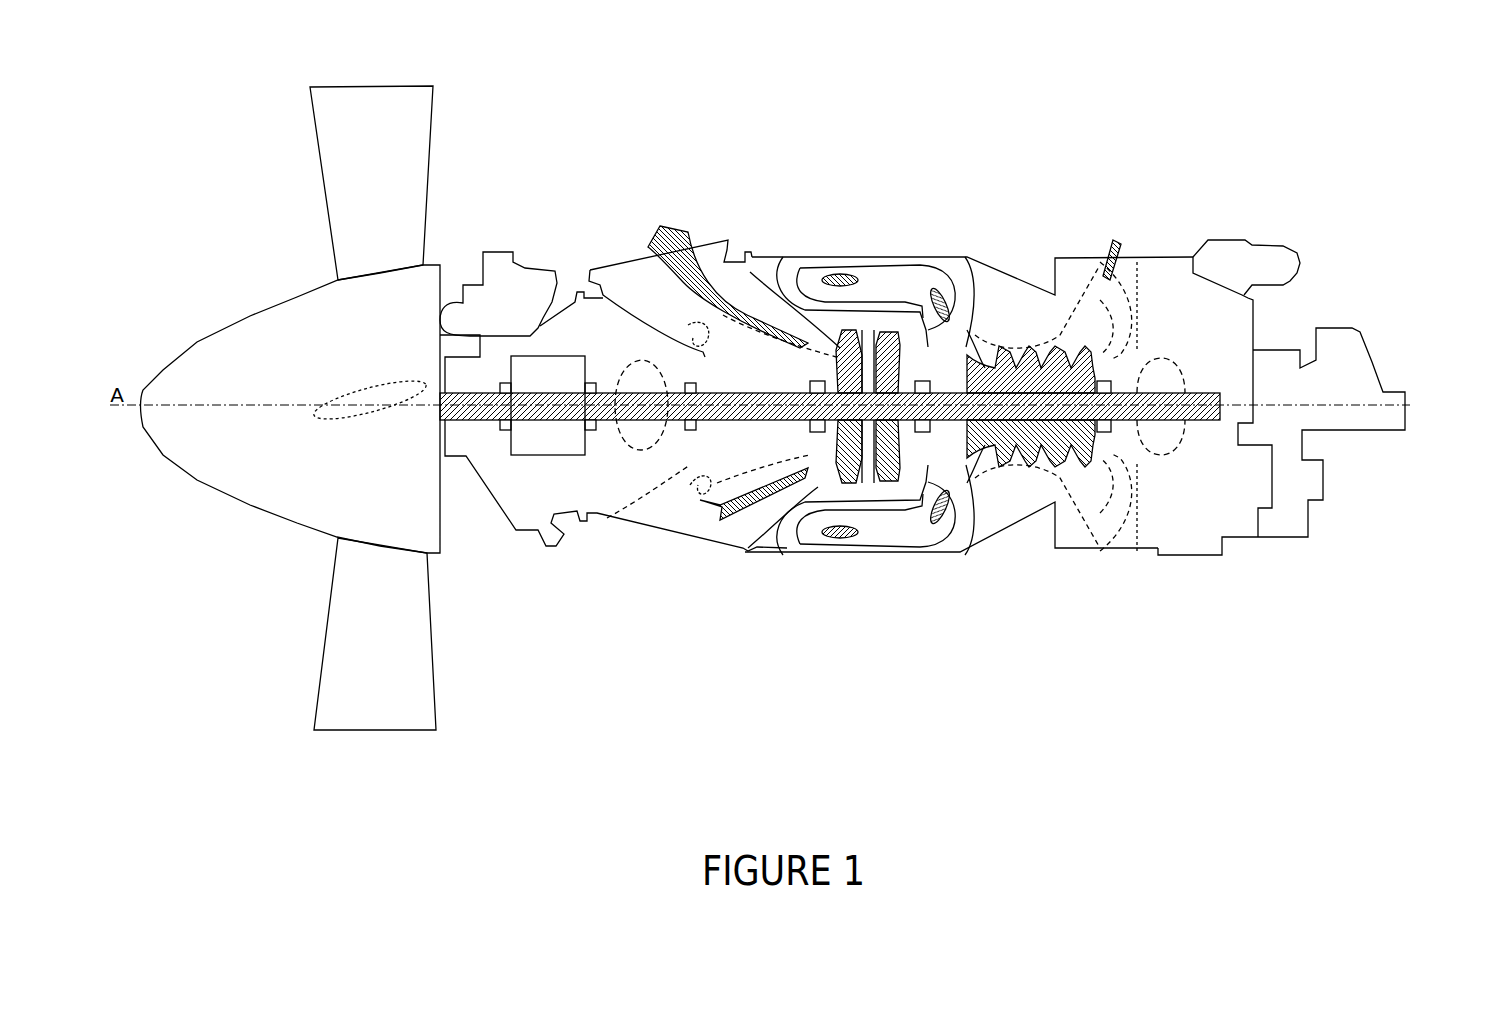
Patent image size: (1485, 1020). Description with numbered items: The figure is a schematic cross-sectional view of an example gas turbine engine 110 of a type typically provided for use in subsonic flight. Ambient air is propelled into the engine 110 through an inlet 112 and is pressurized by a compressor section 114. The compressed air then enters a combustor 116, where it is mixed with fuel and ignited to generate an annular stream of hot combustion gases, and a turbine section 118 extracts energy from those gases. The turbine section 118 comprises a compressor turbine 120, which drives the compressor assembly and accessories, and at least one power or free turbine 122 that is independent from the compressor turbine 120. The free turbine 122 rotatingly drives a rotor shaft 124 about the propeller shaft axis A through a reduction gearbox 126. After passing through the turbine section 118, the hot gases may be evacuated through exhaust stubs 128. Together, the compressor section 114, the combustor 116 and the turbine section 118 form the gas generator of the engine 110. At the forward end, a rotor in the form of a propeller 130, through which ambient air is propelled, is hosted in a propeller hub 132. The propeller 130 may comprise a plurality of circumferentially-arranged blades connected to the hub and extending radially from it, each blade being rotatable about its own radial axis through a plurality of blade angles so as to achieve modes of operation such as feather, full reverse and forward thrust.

The gas turbine engine 110 is at (787, 160).
The inlet 112 is at (1132, 230).
The compressor section 114 is at (1008, 297).
The combustor 116 is at (903, 290).
The turbine section 118 is at (868, 405).
The compressor turbine 120 is at (905, 405).
The power or free turbine 122 is at (870, 402).
The rotor shaft 124 is at (565, 447).
The reduction gearbox 126 is at (548, 420).
The exhaust stubs 128 is at (640, 235).
The propeller 130 is at (343, 157).
The propeller hub 132 is at (265, 320).